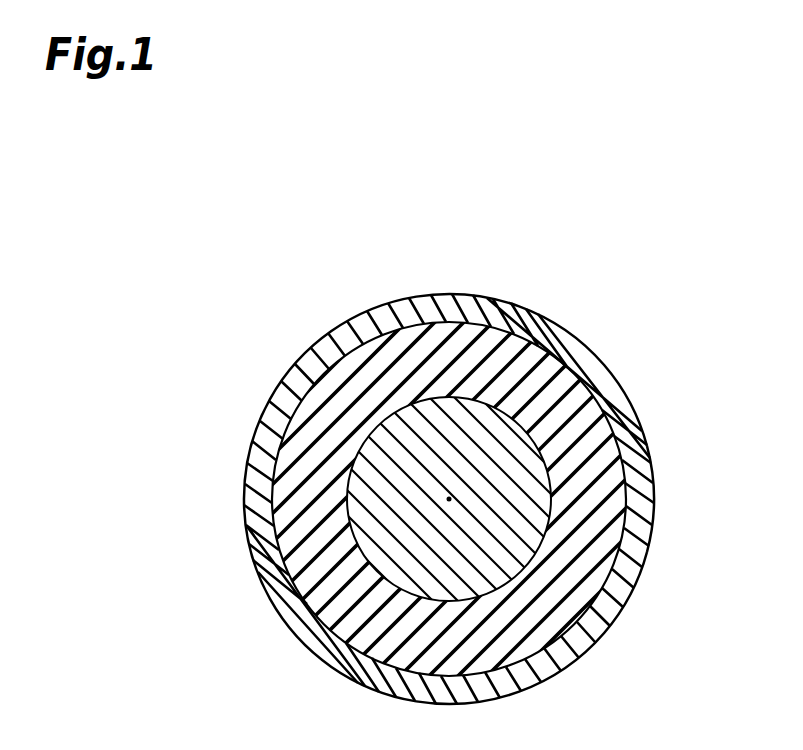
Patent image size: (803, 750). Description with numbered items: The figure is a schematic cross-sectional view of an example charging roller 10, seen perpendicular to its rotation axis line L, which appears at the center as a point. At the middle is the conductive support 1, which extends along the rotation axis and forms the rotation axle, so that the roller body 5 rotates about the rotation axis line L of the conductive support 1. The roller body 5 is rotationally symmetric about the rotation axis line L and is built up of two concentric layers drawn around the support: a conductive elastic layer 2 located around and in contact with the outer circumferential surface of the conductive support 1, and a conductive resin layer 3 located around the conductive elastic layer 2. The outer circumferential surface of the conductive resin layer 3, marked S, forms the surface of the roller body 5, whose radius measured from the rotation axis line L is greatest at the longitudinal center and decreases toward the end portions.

The charging roller 10 is at (473, 395).
The conductive support 1 is at (384, 443).
The conductive elastic layer 2 is at (522, 357).
The conductive resin layer 3 is at (478, 310).
The roller body 5 is at (668, 424).
The outer surface S is at (653, 518).
The rotation axis line L is at (449, 499).